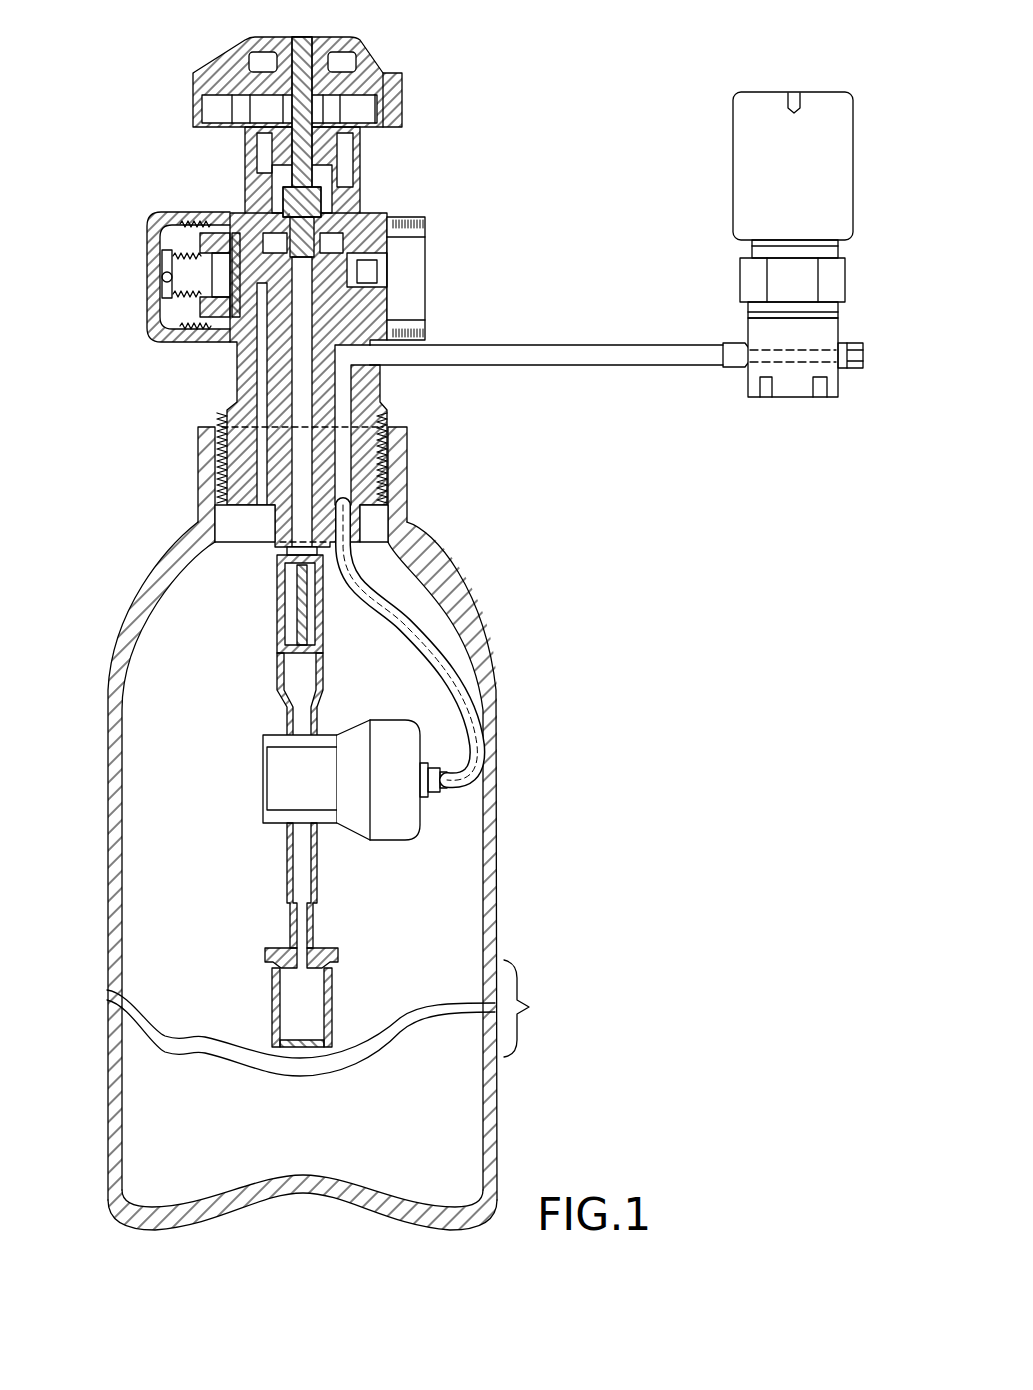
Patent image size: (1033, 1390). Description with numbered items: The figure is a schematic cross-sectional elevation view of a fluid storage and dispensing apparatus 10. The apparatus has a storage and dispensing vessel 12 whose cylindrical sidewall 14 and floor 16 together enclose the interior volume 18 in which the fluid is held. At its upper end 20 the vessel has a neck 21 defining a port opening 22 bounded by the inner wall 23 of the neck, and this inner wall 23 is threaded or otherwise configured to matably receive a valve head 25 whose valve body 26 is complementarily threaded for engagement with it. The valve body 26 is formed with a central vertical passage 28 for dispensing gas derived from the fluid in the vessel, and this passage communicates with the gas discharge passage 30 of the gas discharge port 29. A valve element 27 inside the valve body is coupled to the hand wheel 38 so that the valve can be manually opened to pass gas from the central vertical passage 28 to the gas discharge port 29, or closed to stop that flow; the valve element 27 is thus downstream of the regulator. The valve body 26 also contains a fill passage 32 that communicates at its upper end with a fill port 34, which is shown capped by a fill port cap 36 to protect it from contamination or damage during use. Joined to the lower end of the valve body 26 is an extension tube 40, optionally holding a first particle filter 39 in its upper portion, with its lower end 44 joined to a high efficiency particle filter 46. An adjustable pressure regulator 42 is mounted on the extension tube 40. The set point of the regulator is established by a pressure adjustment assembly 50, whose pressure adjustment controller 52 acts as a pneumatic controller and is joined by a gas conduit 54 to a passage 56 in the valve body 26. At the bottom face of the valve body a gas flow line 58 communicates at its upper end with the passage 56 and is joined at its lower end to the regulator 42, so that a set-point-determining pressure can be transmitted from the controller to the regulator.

The fluid storage and dispensing apparatus 10 is at (587, 777).
The storage and dispensing vessel 12 is at (325, 816).
The cylindrical sidewall 14 is at (497, 868).
The floor 16 is at (255, 1197).
The interior volume 18 is at (289, 1126).
The upper end 20 is at (161, 502).
The neck 21 is at (400, 505).
The port opening 22 is at (383, 425).
The inner wall 23 is at (222, 443).
The valve head 25 is at (150, 120).
The valve body 26 is at (361, 221).
The valve element 27 is at (318, 192).
The central vertical passage 28 is at (303, 447).
The gas discharge port 29 is at (424, 288).
The gas discharge passage 30 is at (372, 268).
The fill passage 32 is at (258, 352).
The fill port 34 is at (160, 293).
The fill port cap 36 is at (167, 260).
The hand wheel 38 is at (374, 58).
The first particle filter 39 is at (290, 613).
The extension tube 40 is at (323, 674).
The adjustable pressure regulator 42 is at (388, 810).
The lower end 44 is at (320, 874).
The high efficiency particle filter 46 is at (272, 985).
The pressure adjustment assembly 50 is at (841, 72).
The pressure adjustment controller 52 is at (733, 191).
The gas conduit 54 is at (630, 367).
The passage 56 is at (344, 388).
The gas flow line 58 is at (460, 673).